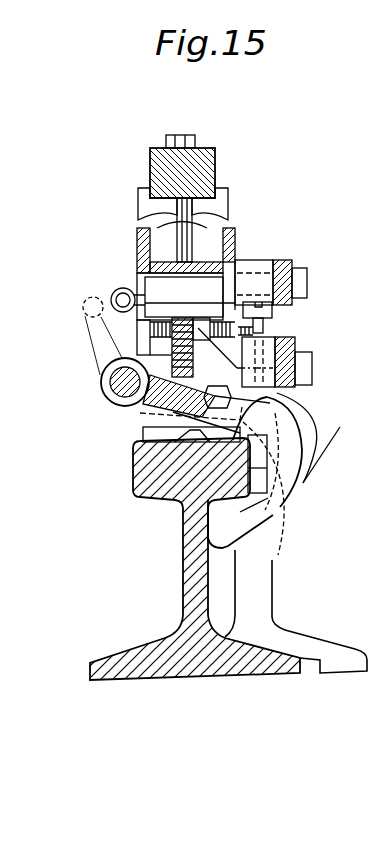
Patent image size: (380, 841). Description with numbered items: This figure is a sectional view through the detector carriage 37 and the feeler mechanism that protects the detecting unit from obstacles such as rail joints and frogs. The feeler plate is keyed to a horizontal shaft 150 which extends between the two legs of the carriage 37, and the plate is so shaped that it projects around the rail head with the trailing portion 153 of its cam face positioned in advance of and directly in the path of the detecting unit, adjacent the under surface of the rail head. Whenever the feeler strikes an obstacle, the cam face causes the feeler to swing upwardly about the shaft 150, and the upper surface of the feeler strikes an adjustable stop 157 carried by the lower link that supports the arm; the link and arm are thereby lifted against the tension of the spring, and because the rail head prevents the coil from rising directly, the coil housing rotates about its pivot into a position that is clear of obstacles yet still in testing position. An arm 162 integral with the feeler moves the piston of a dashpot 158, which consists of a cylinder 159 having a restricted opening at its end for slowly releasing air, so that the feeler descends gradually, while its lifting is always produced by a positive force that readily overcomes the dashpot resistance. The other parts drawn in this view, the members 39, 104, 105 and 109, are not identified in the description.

The adjusting nut block 39 is at (150, 158).
The carriage 37 is at (137, 240).
The dashpot 158 is at (143, 280).
The cylinder 159 is at (147, 287).
The arm 162 is at (110, 342).
The horizontal shaft 150 is at (103, 396).
The bolt 104 is at (290, 260).
The adjustable stop 157 is at (270, 322).
The bolt 105 is at (292, 346).
The clamp arm 109 is at (318, 437).
The trailing portion 153 is at (237, 562).